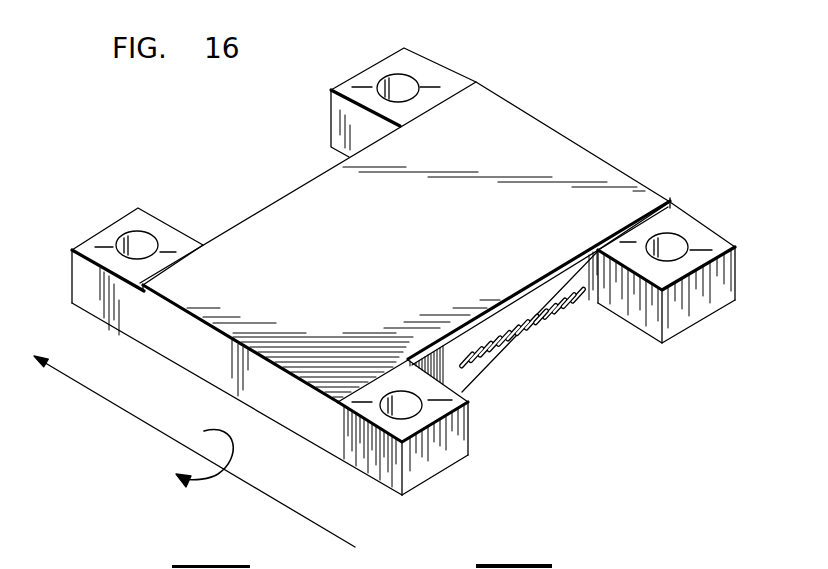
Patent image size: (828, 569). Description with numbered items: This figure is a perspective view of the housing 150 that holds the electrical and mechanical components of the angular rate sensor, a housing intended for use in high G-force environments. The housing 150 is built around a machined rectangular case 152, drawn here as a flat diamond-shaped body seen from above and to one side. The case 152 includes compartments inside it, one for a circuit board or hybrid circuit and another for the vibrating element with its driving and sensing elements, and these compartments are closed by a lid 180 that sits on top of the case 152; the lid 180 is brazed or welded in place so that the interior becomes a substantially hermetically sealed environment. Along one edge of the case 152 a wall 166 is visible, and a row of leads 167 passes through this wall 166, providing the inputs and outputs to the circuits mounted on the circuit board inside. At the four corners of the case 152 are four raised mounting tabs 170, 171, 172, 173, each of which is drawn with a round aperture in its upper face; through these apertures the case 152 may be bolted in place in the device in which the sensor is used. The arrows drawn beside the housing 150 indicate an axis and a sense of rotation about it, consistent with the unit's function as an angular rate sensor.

The housing 150 is at (252, 183).
The rectangular case 152 is at (480, 373).
The wall 166 is at (515, 345).
The leads 167 is at (568, 313).
The mounting tab 170 is at (429, 457).
The mounting tab 171 is at (699, 313).
The mounting tab 172 is at (378, 72).
The mounting tab 173 is at (103, 242).
The lid 180 is at (607, 177).